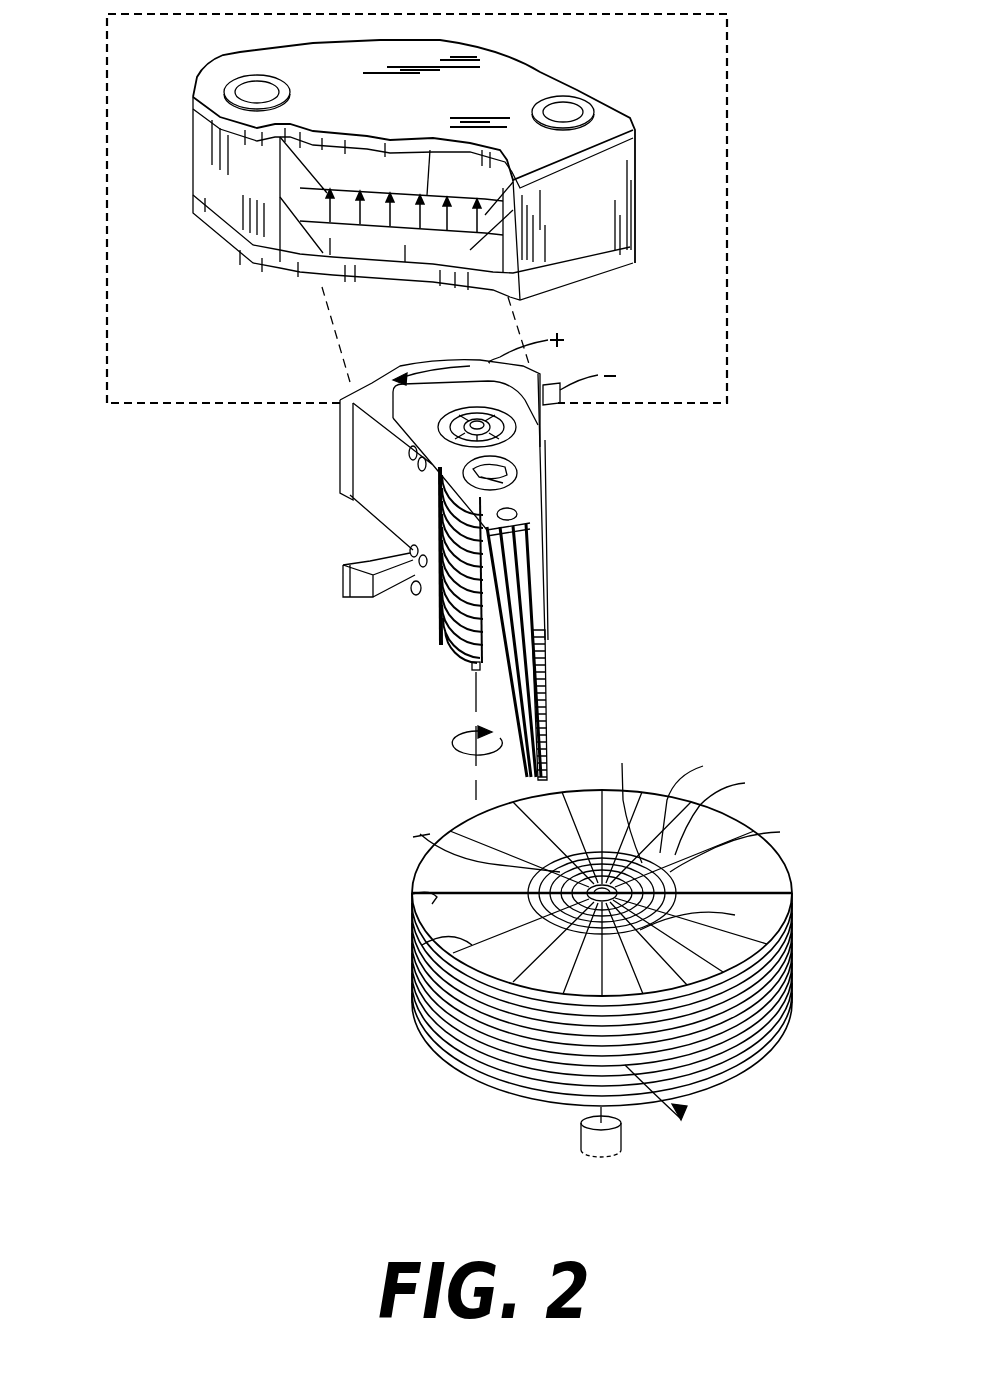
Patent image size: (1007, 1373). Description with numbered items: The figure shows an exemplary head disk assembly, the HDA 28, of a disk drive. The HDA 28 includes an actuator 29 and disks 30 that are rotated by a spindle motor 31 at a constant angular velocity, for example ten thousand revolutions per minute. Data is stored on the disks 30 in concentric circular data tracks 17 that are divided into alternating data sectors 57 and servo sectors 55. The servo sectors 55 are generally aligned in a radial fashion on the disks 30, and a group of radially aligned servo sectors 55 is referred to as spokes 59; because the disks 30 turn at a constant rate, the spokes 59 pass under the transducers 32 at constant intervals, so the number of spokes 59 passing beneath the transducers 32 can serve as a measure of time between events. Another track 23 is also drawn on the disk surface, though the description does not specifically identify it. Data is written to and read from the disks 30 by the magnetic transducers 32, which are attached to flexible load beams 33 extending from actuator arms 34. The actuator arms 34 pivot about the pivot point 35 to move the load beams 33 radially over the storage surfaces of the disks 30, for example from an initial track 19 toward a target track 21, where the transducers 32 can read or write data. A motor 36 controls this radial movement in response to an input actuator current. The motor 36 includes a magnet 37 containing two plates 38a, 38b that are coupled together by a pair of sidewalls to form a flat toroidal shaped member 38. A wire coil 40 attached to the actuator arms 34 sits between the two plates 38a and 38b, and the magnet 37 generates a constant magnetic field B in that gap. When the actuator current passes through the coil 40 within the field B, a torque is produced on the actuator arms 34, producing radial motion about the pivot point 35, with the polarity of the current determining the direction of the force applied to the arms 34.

The concentric circular data tracks 17 is at (627, 754).
The initial track 19 is at (761, 789).
The target track 21 is at (797, 832).
The servo sector 23 is at (730, 762).
The HDA 28 is at (633, 499).
The actuator 29 is at (182, 483).
The disks 30 is at (602, 959).
The spindle motor 31 is at (580, 1141).
The magnetic transducers 32 is at (543, 633).
The flexible load beams 33 is at (535, 571).
The actuator arms 34 is at (530, 487).
The pivot point 35 is at (518, 424).
The motor 36 is at (730, 186).
The magnet 37 is at (519, 47).
The flat toroidal shaped member 38 is at (636, 200).
The plate 38a is at (377, 145).
The plate 38b is at (396, 261).
The wire coil 40 is at (426, 334).
The servo sectors 55 is at (412, 897).
The data sectors 57 is at (397, 842).
The spokes 59 is at (412, 960).